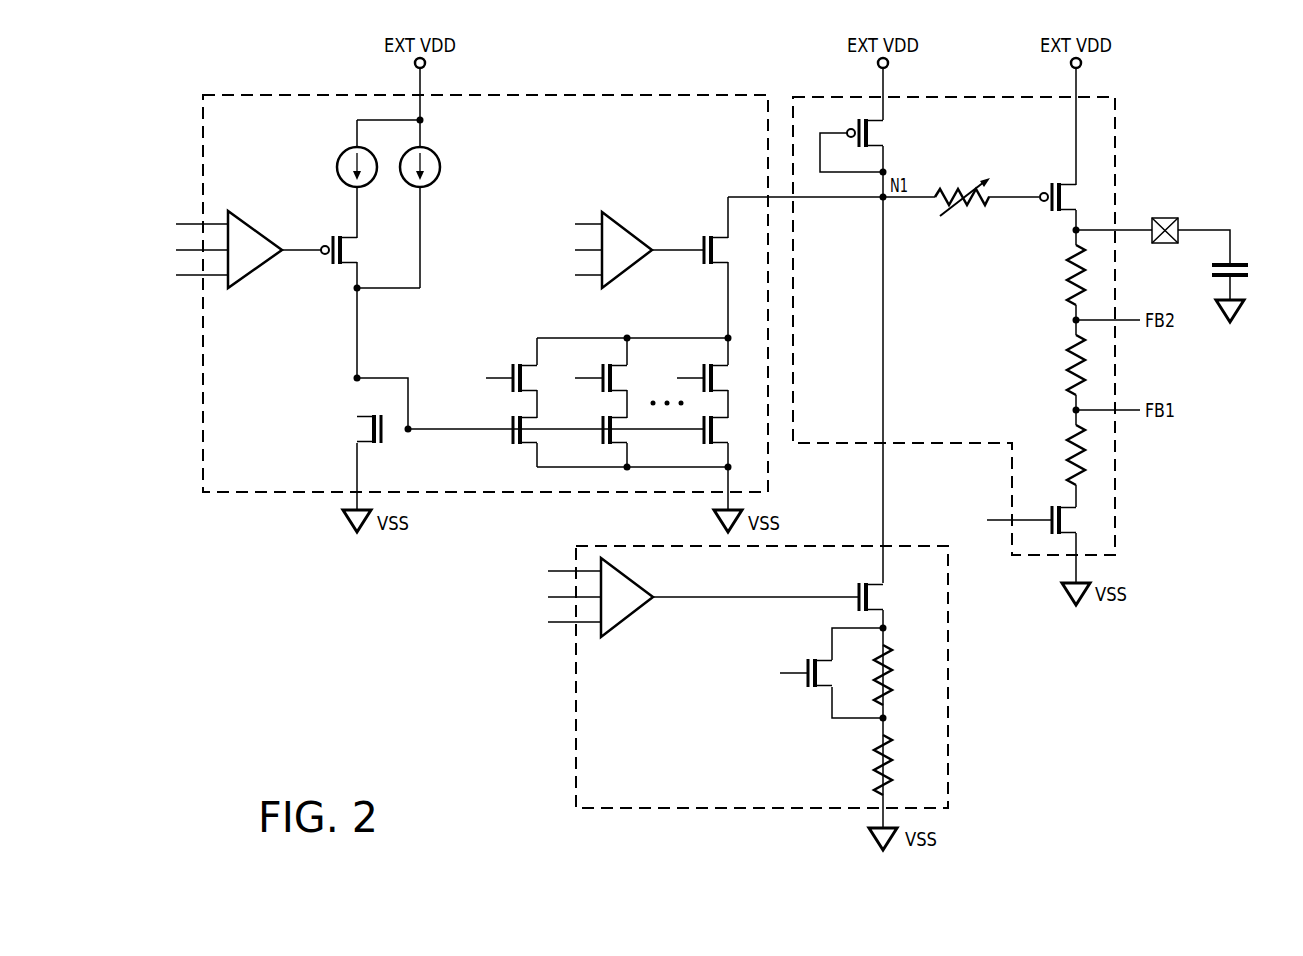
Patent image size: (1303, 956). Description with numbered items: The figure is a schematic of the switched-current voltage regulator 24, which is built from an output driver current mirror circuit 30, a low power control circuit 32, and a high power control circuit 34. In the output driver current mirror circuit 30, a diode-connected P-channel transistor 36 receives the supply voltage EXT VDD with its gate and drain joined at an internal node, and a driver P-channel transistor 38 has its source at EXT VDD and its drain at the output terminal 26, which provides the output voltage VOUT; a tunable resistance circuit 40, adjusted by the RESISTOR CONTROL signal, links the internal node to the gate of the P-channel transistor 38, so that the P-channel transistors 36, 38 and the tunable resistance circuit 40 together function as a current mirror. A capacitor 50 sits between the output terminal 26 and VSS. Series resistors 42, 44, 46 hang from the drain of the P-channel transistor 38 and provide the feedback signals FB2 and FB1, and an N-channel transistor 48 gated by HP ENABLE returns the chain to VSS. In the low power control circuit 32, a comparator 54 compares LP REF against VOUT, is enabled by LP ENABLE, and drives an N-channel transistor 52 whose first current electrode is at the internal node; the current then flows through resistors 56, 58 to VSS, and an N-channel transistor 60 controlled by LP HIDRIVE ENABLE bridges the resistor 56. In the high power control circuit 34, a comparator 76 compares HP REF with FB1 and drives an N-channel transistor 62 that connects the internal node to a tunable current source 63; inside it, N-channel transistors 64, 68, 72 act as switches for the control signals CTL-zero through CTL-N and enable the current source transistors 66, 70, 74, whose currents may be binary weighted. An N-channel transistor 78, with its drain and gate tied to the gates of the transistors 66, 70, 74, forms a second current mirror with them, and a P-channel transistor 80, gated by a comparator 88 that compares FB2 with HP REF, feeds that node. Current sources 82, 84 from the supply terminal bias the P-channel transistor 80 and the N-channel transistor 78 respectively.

The switched-current voltage regulator 24 is at (1200, 88).
The output terminal 26 is at (1164, 246).
The output driver current mirror circuit 30 is at (973, 94).
The low power control circuit 32 is at (576, 744).
The high power control circuit 34 is at (685, 95).
The P-channel transistor 36 is at (880, 133).
The P-channel transistor 38 is at (1071, 197).
The tunable resistance circuit 40 is at (957, 182).
The resistor 42 is at (1066, 281).
The resistor 44 is at (1066, 369).
The resistor 46 is at (1066, 459).
The N-channel transistor 48 is at (1072, 520).
The capacitor 50 is at (1247, 262).
The N-channel transistor 52 is at (879, 597).
The comparator 54 is at (628, 621).
The resistor 56 is at (893, 667).
The resistor 58 is at (872, 769).
The N-channel transistor 60 is at (828, 673).
The N-channel transistor 62 is at (729, 250).
The tunable current source 63 is at (556, 330).
The N-channel transistor 64 is at (729, 378).
The N-channel transistor 66 is at (729, 430).
The N-channel transistor 68 is at (598, 391).
The N-channel transistor 70 is at (598, 442).
The N-channel transistor 72 is at (513, 362).
The N-channel transistor 74 is at (513, 445).
The comparator 76 is at (629, 226).
The N-channel transistor 78 is at (366, 429).
The P-channel transistor 80 is at (342, 250).
The current source 82 is at (337, 167).
The current source 84 is at (441, 167).
The comparator 88 is at (260, 222).